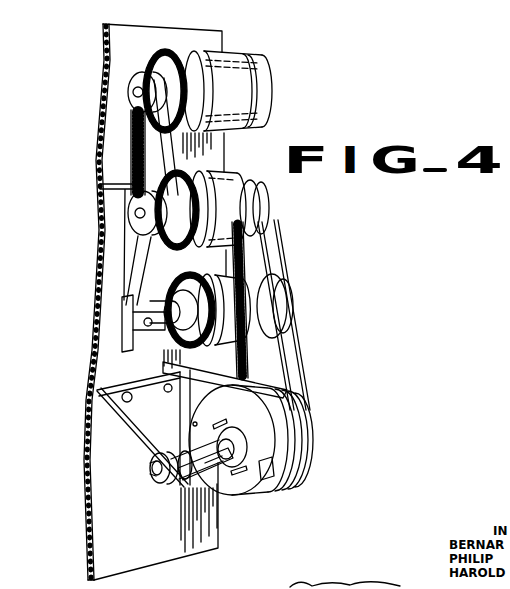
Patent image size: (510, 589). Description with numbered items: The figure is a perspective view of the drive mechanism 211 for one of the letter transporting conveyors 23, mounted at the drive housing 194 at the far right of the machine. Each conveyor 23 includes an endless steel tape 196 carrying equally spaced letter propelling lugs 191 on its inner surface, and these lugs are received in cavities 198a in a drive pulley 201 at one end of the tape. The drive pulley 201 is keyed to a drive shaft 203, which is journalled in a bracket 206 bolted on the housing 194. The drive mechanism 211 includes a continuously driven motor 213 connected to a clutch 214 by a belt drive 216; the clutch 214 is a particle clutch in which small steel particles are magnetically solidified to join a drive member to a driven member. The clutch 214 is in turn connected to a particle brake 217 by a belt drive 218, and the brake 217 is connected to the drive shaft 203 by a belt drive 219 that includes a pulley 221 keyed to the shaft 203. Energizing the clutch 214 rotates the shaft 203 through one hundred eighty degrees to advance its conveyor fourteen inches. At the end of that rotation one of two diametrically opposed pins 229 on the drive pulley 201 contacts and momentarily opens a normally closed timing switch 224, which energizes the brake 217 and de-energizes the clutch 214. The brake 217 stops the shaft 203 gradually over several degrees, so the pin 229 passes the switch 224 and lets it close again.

The drive housing 194 is at (91, 355).
The bracket 206 is at (101, 436).
The drive mechanism 211 is at (267, 113).
The motor 213 is at (248, 58).
The clutch 214 is at (230, 188).
The belt drive 216 is at (133, 152).
The particle brake 217 is at (233, 282).
The belt drive 218 is at (252, 234).
The belt drive 219 is at (288, 352).
The cavities 198a is at (194, 422).
The drive pulley 201 is at (270, 423).
The endless steel tape 196 is at (290, 437).
The pulley 221 is at (303, 448).
The letter propelling lugs 191 is at (280, 468).
The letter transporting conveyor 23 is at (278, 492).
The drive shaft 203 is at (158, 473).
The timing switch 224 is at (190, 485).
The pins 229 is at (194, 423).